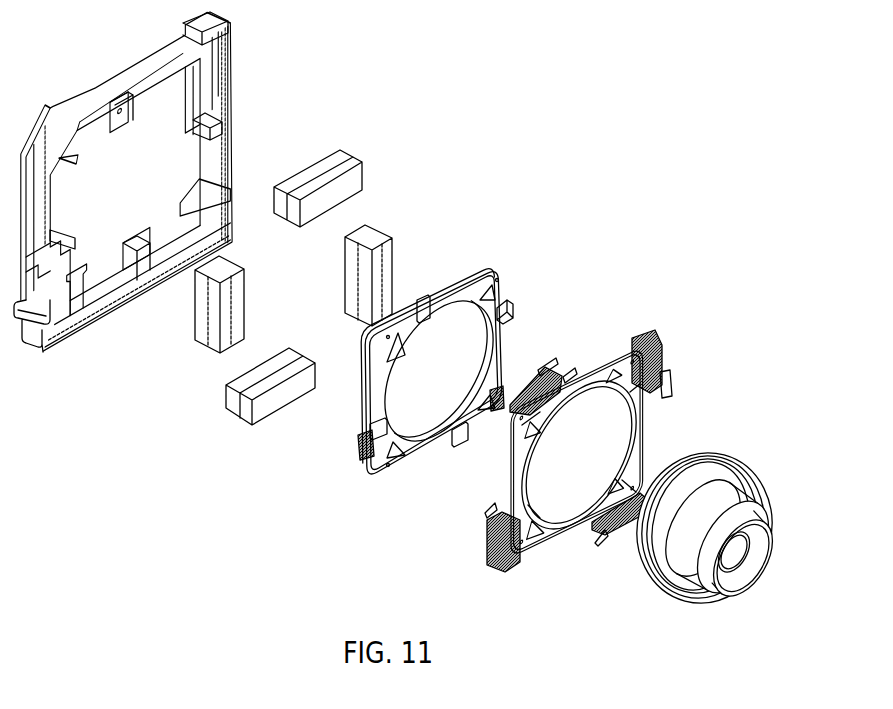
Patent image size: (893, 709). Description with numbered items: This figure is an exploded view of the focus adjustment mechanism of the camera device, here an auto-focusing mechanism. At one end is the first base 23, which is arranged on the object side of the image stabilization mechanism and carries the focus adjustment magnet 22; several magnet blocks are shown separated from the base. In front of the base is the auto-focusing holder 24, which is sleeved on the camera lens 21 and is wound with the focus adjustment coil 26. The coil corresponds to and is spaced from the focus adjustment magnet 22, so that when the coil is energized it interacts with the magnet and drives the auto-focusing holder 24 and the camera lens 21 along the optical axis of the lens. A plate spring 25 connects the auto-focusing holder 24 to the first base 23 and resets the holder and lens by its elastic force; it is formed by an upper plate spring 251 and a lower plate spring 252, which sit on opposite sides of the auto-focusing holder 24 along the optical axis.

The camera lens 21 is at (712, 460).
The focus adjustment magnet 22 is at (393, 278).
The first base 23 is at (212, 107).
The auto-focusing holder 24 is at (498, 302).
The plate spring 25 is at (629, 420).
The upper plate spring 251 is at (670, 372).
The lower plate spring 252 is at (637, 337).
The focus adjustment coil 26 is at (478, 262).